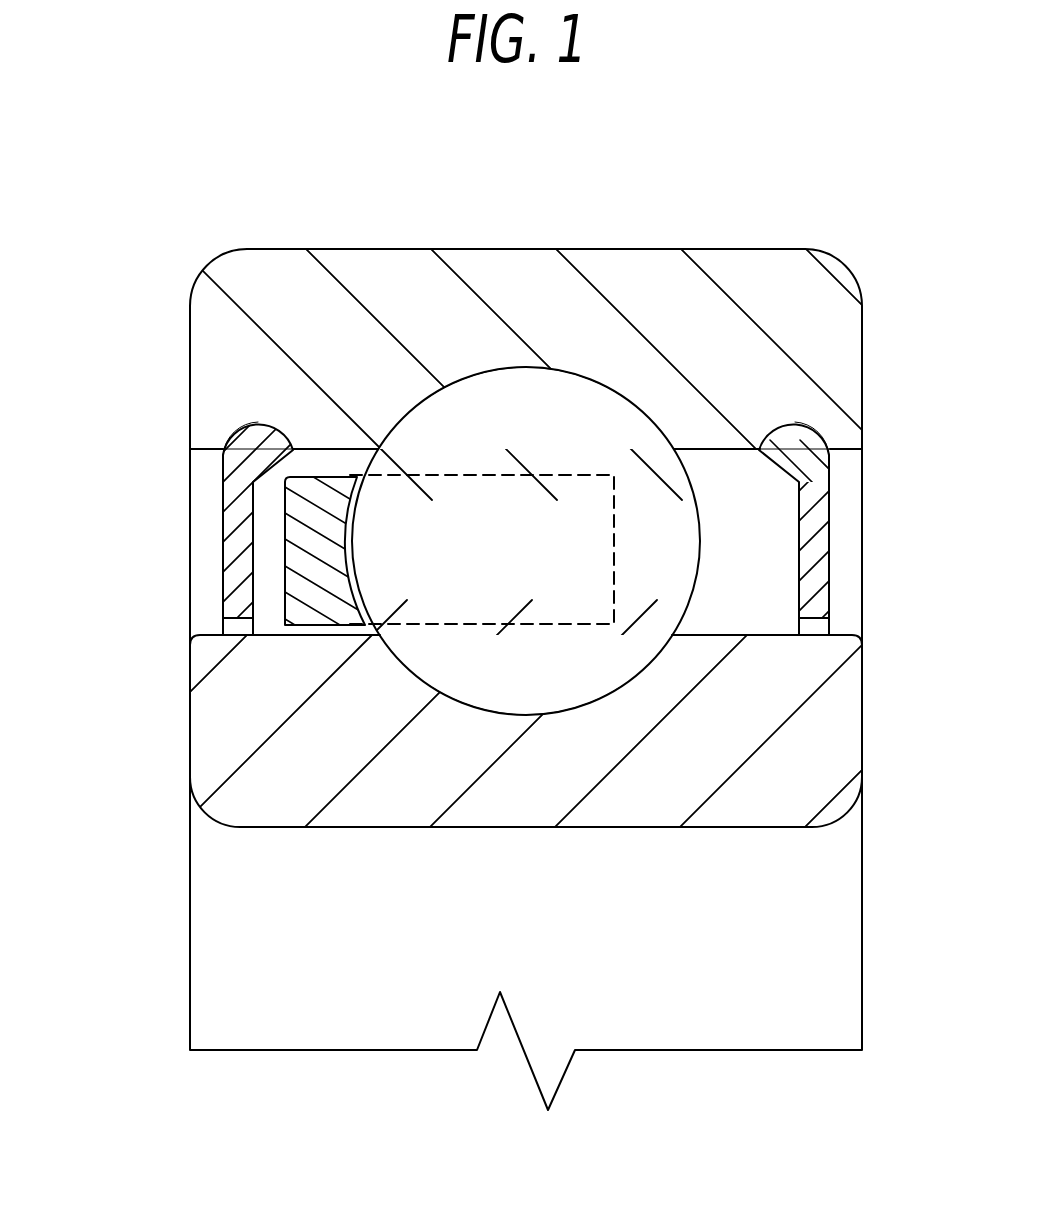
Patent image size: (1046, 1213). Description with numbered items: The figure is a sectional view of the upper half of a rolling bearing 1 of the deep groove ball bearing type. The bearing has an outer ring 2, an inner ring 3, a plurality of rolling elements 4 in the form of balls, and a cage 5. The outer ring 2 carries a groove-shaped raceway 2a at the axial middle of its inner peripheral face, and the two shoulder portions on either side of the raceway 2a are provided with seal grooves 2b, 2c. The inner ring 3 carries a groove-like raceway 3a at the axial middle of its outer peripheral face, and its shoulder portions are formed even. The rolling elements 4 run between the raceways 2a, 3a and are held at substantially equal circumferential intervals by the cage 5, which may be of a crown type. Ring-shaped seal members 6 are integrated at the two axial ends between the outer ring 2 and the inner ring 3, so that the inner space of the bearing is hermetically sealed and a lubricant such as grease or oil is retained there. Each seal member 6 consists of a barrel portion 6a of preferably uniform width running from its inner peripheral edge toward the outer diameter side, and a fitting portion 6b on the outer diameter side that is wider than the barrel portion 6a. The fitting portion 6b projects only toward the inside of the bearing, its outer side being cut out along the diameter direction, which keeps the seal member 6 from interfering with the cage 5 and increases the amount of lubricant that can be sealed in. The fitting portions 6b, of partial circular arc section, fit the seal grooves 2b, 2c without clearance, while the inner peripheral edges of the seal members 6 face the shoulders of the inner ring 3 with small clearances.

The rolling bearing 1 is at (110, 786).
The outer ring 2 is at (526, 263).
The raceway 2a is at (592, 378).
The seal groove 2b is at (798, 427).
The seal groove 2c is at (246, 424).
The inner ring 3 is at (233, 722).
The raceway 3a is at (560, 714).
The rolling element 4 is at (463, 403).
The cage 5 is at (305, 617).
The seal member 6 is at (200, 514).
The barrel portion 6a is at (233, 576).
The fitting portion 6b is at (225, 445).